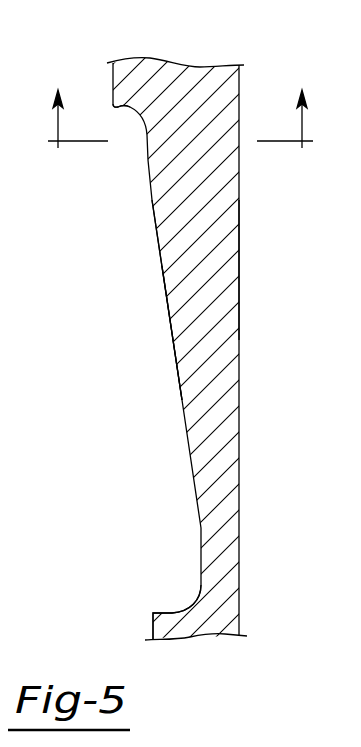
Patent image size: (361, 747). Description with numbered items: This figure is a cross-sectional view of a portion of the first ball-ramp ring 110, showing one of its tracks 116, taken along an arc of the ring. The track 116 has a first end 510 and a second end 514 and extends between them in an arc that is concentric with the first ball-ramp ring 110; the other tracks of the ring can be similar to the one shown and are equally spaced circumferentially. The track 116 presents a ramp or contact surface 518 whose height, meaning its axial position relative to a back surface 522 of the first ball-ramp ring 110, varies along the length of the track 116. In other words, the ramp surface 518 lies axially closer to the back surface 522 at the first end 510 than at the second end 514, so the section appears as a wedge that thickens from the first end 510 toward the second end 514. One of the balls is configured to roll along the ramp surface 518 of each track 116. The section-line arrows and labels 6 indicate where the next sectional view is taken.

The first ball-ramp ring 110 is at (205, 88).
The second end 514 is at (113, 105).
The track 116 is at (165, 280).
The ramp surface 518 is at (172, 328).
The back surface 522 is at (240, 266).
The first end 510 is at (172, 613).
The section line 6- 6 is at (179, 138).